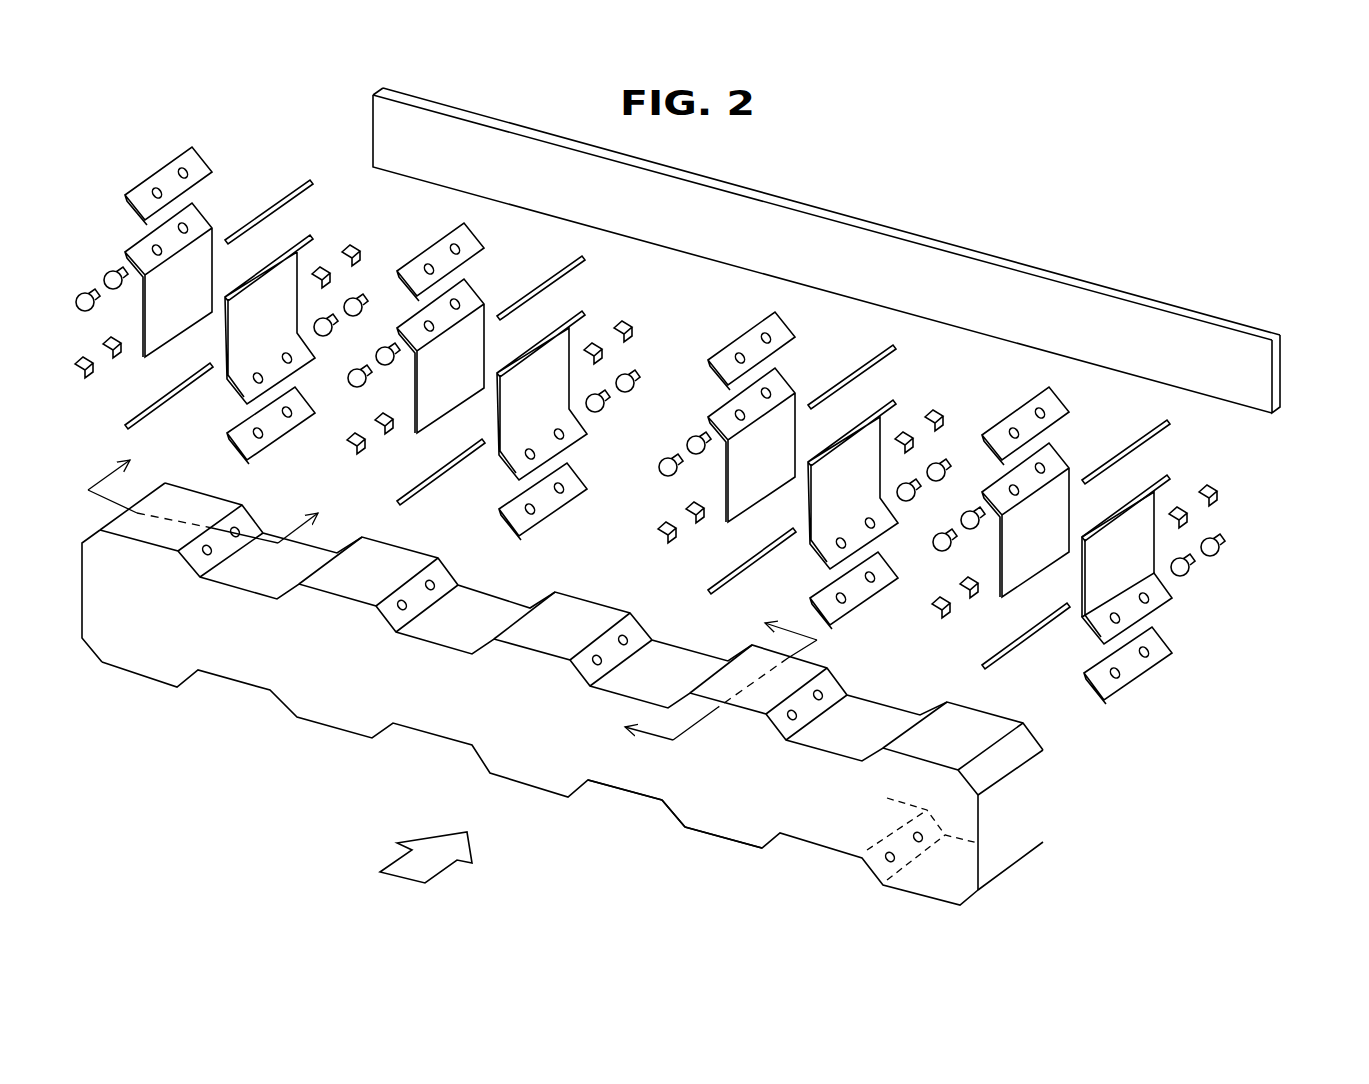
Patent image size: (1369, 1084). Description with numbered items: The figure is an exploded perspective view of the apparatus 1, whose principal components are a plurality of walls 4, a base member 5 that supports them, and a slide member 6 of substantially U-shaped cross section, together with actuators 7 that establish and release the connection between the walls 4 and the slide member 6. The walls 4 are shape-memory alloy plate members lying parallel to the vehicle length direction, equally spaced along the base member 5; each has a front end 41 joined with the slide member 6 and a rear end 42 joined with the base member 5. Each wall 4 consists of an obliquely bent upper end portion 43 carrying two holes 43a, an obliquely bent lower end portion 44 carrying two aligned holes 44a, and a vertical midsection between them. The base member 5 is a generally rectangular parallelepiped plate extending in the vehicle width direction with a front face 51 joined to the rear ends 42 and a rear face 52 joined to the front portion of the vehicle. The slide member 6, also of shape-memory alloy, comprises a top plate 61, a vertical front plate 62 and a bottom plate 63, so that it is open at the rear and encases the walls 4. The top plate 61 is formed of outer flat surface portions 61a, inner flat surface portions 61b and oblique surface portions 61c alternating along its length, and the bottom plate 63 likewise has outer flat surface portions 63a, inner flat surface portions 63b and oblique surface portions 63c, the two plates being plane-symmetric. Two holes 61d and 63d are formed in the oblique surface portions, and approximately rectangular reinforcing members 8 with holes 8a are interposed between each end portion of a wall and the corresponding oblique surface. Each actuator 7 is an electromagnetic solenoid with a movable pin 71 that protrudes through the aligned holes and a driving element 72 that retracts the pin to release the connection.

The apparatus 1 is at (752, 160).
The wall 4 is at (1090, 637).
The front end 41 is at (1000, 598).
The rear end 42 is at (1158, 553).
The upper end portion 43 is at (1090, 520).
The holes 43a is at (1080, 512).
The lower end portion 44 is at (1088, 647).
The holes 44a is at (1118, 619).
The base member 5 is at (955, 240).
The front face 51 is at (937, 307).
The rear face 52 is at (1280, 357).
The slide member 6 is at (1030, 860).
The top plate 61 is at (665, 552).
The outer flat surface portions 61a is at (547, 610).
The inner flat surface portions 61b is at (670, 657).
The oblique surface portions 61c is at (730, 653).
The holes 61d is at (793, 715).
The front plate 62 is at (540, 755).
The bottom plate 63 is at (752, 888).
The outer flat surface portions 63a is at (722, 805).
The inner flat surface portions 63b is at (622, 793).
The oblique surface portions 63c is at (685, 822).
The holes 63d is at (918, 838).
The actuator 7 is at (1219, 488).
The movable pin 71 is at (1204, 493).
The driving element 72 is at (1215, 498).
The reinforcing member 8 is at (1025, 410).
The holes 8a is at (1118, 673).